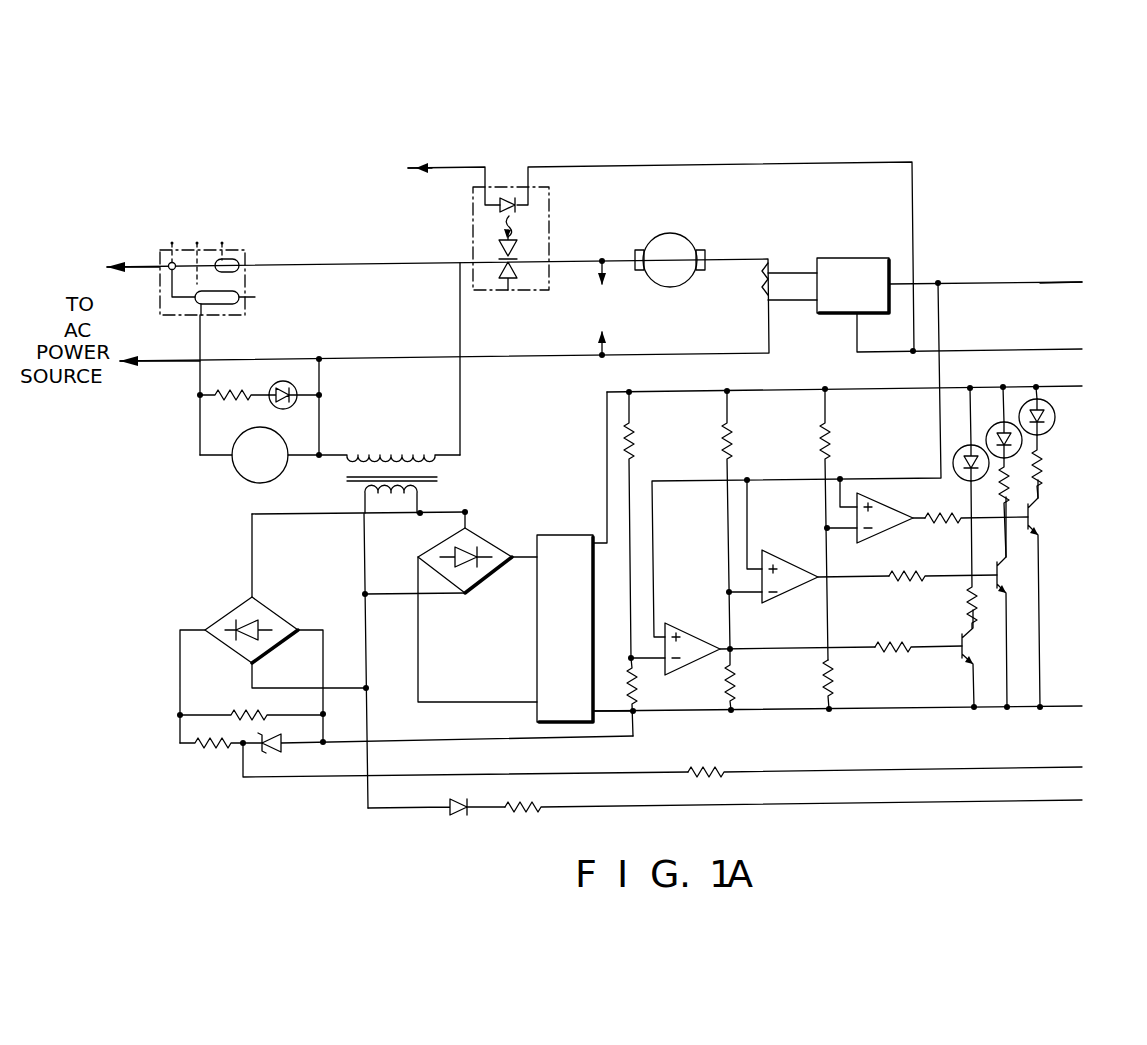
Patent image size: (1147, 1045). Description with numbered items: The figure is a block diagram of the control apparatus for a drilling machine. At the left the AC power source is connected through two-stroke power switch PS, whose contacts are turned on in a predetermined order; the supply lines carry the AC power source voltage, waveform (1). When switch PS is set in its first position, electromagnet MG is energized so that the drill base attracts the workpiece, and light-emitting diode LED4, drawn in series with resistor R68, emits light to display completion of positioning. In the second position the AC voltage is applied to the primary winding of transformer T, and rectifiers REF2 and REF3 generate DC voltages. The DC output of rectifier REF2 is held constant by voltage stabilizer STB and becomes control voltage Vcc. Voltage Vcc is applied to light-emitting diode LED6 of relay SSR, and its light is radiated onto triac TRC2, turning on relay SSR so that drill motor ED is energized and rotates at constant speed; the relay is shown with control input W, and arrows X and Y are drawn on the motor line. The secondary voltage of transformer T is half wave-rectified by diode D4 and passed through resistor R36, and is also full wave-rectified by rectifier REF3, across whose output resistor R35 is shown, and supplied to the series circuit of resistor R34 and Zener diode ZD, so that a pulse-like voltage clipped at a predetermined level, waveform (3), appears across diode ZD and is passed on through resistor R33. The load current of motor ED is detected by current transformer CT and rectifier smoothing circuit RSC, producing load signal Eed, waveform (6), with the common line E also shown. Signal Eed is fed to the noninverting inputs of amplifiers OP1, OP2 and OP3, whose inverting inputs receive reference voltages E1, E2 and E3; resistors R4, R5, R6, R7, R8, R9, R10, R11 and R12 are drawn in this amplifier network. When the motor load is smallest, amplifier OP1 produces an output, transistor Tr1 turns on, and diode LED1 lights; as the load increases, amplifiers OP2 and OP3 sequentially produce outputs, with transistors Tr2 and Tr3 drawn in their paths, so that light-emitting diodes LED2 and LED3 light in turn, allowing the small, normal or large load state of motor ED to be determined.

The control input terminal W is at (641, 254).
The current direction X is at (611, 279).
The current direction Y is at (611, 334).
The AC power source voltage waveform 1 is at (131, 264).
The clipped pulse-like voltage waveform 3 is at (275, 777).
The load signal waveform 6 is at (1073, 284).
The two-stroke power switch PS is at (238, 262).
The relay SSR is at (476, 215).
The light-emitting diode of relay SSR LED6 is at (521, 215).
The triac TRC2 is at (508, 293).
The drill motor ED is at (670, 260).
The current transformer CT is at (756, 290).
The rectifier smoothing circuit RSC is at (850, 262).
The load signal Eed is at (983, 284).
The ground / reference potential E is at (1061, 349).
The resistor R68 is at (234, 383).
The light-emitting diode LED4 is at (291, 386).
The electromagnet MG is at (259, 455).
The transformer T is at (440, 472).
The rectifier REF3 is at (211, 617).
The rectifier REF2 is at (476, 533).
The voltage stabilizer STB is at (537, 669).
The resistor R35 is at (239, 713).
The resistor R34 is at (213, 762).
The Zener diode ZD is at (276, 754).
The resistor R33 is at (885, 786).
The diode D4 is at (436, 822).
The resistor R36 is at (793, 822).
The control voltage Vcc is at (605, 437).
The resistor R4 is at (647, 525).
The resistor R5 is at (635, 701).
The resistor R6 is at (745, 520).
The resistor R7 is at (747, 679).
The resistor R8 is at (843, 524).
The resistor R9 is at (843, 684).
The resistor R10 is at (917, 661).
The resistor R11 is at (941, 590).
The resistor R12 is at (969, 532).
The reference voltage E1 is at (631, 654).
The reference voltage E2 is at (736, 576).
The reference voltage E3 is at (829, 502).
The amplifier OP1 is at (702, 664).
The amplifier OP2 is at (793, 603).
The amplifier OP3 is at (886, 537).
The transistor Tr1 is at (957, 658).
The transistor Tr2 is at (1010, 571).
The transistor Tr3 is at (1037, 517).
The light-emitting diode LED1 is at (977, 442).
The light-emitting diode LED2 is at (1023, 443).
The light-emitting diode LED3 is at (1055, 415).